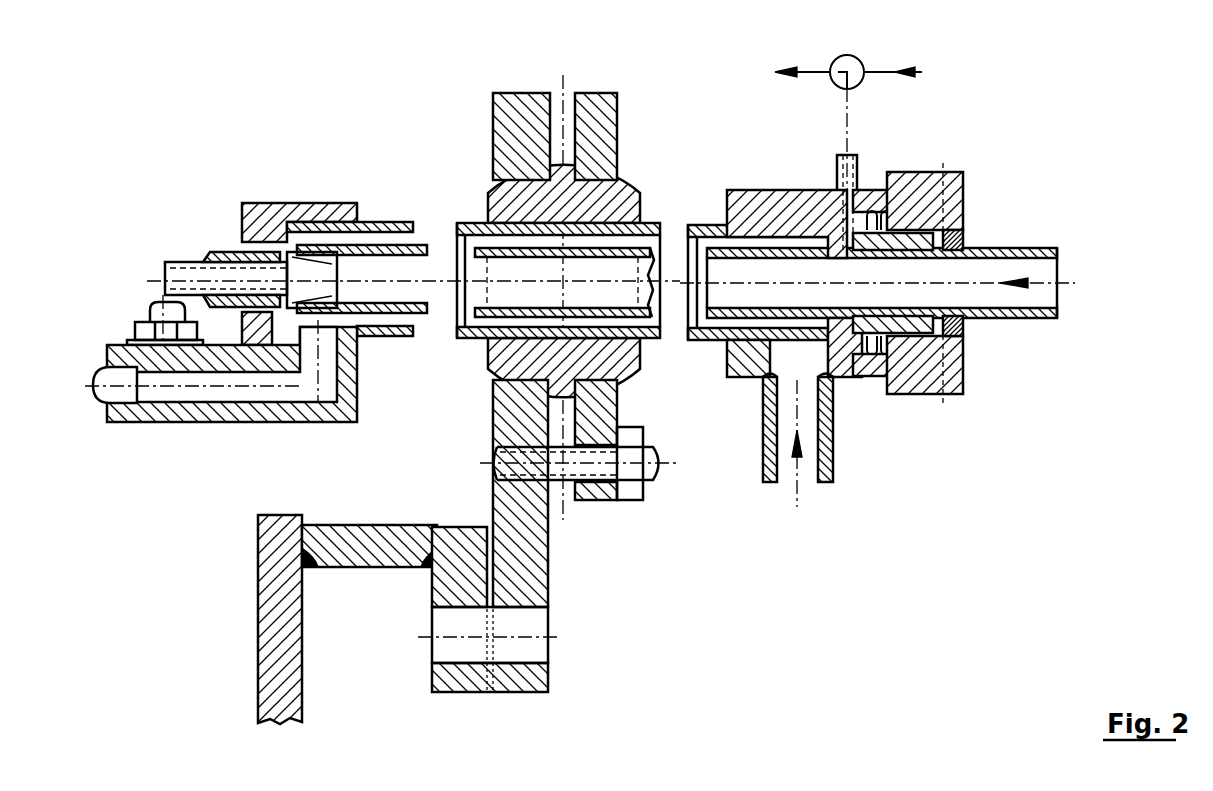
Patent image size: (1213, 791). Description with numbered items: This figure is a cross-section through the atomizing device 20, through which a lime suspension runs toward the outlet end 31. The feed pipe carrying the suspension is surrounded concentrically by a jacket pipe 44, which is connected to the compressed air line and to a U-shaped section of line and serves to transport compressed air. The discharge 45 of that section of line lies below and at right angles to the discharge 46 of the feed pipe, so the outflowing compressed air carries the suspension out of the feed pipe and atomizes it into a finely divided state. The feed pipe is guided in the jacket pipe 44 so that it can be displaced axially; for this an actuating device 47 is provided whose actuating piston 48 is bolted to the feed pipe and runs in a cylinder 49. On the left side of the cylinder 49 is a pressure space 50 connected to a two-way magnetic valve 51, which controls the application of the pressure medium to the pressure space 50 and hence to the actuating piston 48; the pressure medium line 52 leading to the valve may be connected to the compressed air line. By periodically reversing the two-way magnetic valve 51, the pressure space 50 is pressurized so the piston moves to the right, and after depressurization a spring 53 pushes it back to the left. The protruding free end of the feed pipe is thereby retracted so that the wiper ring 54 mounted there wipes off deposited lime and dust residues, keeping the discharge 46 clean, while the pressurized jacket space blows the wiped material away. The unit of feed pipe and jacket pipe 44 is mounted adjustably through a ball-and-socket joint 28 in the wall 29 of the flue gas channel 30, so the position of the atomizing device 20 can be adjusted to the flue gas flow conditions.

The atomizing device 20 is at (766, 626).
The ball-and-socket joint 28 is at (628, 190).
The wall 29 is at (278, 660).
The flue gas channel 30 is at (212, 599).
The outlet end 31 is at (114, 256).
The jacket pipe 44 is at (463, 230).
The discharge 45 is at (148, 307).
The discharge 46 is at (172, 272).
The actuating device 47 is at (947, 456).
The actuating piston 48 is at (963, 237).
The cylinder 49 is at (927, 203).
The pressure space 50 is at (847, 360).
The two-way magnetic valve 51 is at (850, 55).
The pressure medium line 52 is at (887, 70).
The spring 53 is at (927, 350).
The wiper ring 54 is at (240, 247).